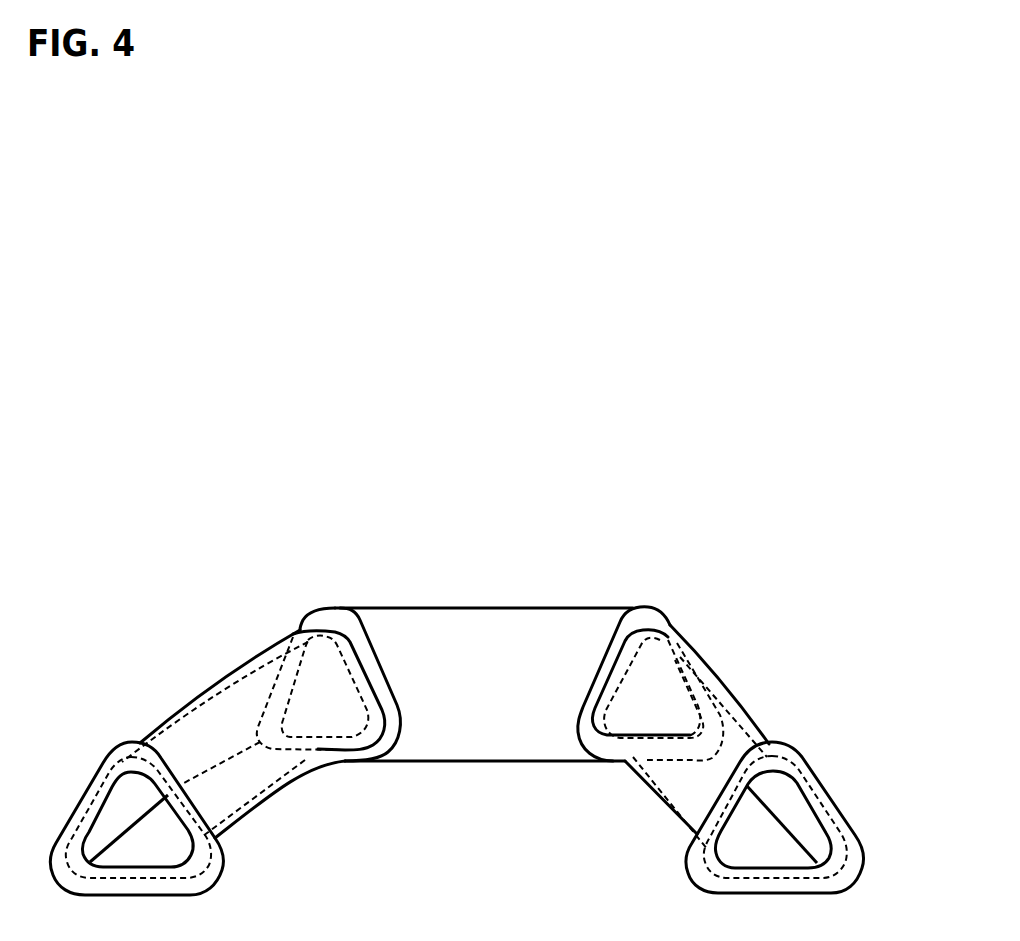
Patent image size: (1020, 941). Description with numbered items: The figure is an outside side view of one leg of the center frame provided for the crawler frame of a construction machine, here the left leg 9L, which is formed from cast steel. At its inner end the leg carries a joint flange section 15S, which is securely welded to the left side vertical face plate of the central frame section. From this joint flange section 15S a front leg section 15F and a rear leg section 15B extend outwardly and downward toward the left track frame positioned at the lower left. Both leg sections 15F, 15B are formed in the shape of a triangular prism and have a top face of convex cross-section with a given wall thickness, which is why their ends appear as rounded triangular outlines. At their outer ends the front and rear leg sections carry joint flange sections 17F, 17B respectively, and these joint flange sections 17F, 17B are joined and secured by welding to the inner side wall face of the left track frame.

The left leg 9L is at (481, 702).
The joint flange section 15S is at (470, 609).
The front leg section 15F is at (192, 698).
The rear leg section 15B is at (743, 708).
The joint flange section 17F is at (222, 866).
The joint flange section 17B is at (830, 797).